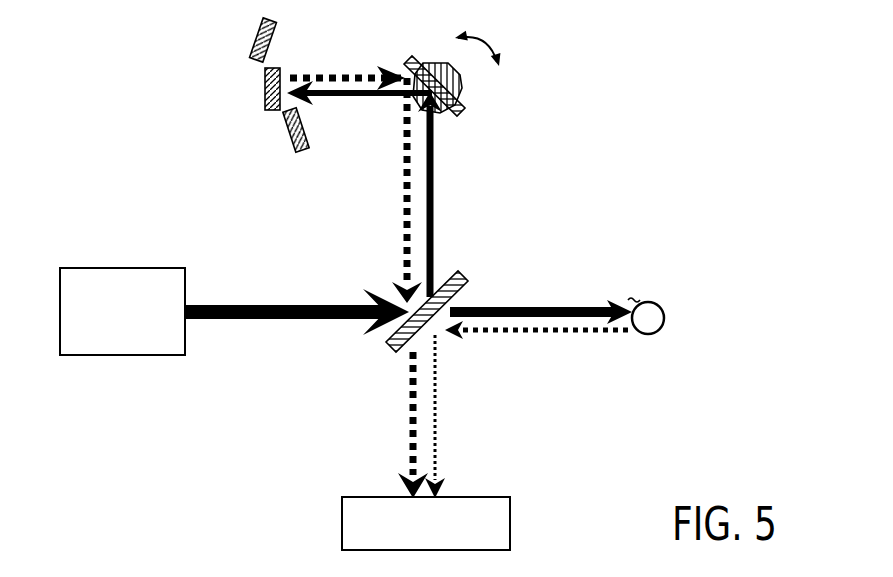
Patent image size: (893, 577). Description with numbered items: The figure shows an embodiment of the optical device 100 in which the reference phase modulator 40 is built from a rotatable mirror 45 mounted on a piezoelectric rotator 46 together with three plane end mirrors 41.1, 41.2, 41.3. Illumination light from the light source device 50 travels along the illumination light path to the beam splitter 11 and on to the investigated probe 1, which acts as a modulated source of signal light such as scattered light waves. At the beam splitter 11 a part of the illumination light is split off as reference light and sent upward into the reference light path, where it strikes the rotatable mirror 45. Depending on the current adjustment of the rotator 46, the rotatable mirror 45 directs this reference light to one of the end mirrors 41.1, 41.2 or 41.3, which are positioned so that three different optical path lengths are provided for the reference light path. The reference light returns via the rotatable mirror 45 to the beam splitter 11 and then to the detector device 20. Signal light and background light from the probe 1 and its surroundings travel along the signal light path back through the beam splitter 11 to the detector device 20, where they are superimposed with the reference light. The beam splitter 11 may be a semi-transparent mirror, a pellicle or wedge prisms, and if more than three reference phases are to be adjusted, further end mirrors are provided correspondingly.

The probe 1 is at (648, 335).
The beam splitter 11 is at (391, 352).
The detector device 20 is at (488, 543).
The reference phase modulator 40 is at (357, 146).
The first plane end mirror 41.1 is at (252, 43).
The second plane end mirror 41.2 is at (262, 82).
The third plane end mirror 41.3 is at (288, 133).
The rotatable mirror 45 is at (462, 117).
The piezoelectric rotator 46 is at (462, 88).
The light source device 50 is at (122, 344).
The optical device 100 is at (232, 207).